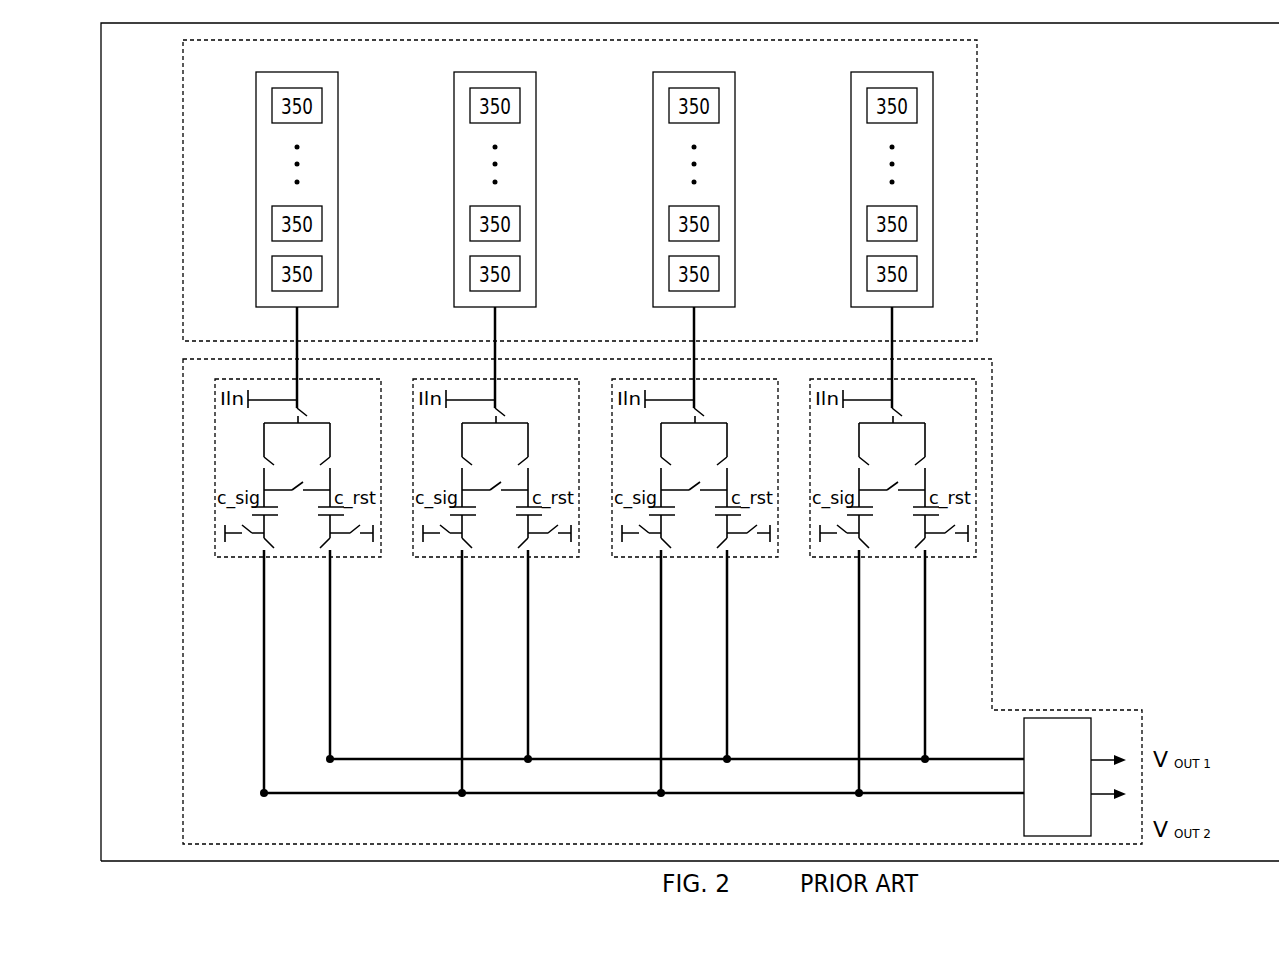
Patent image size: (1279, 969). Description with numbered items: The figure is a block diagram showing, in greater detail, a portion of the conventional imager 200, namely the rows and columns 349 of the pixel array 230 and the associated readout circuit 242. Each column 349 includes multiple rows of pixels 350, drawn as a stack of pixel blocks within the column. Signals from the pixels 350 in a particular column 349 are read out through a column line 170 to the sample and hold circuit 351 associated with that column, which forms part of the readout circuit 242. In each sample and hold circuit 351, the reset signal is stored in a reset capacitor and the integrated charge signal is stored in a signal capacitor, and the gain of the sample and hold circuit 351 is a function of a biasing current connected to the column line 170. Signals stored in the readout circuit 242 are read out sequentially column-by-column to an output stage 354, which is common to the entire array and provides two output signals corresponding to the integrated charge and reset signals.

The conventional imager 200 is at (1208, 68).
The pixel array 230 is at (977, 73).
The readout circuit 242 is at (993, 376).
The column 349 is at (256, 104).
The pixel 350 is at (594, 189).
The column line 170 is at (299, 350).
The sample and hold circuit 351 is at (373, 401).
The output stage 354 is at (1076, 788).